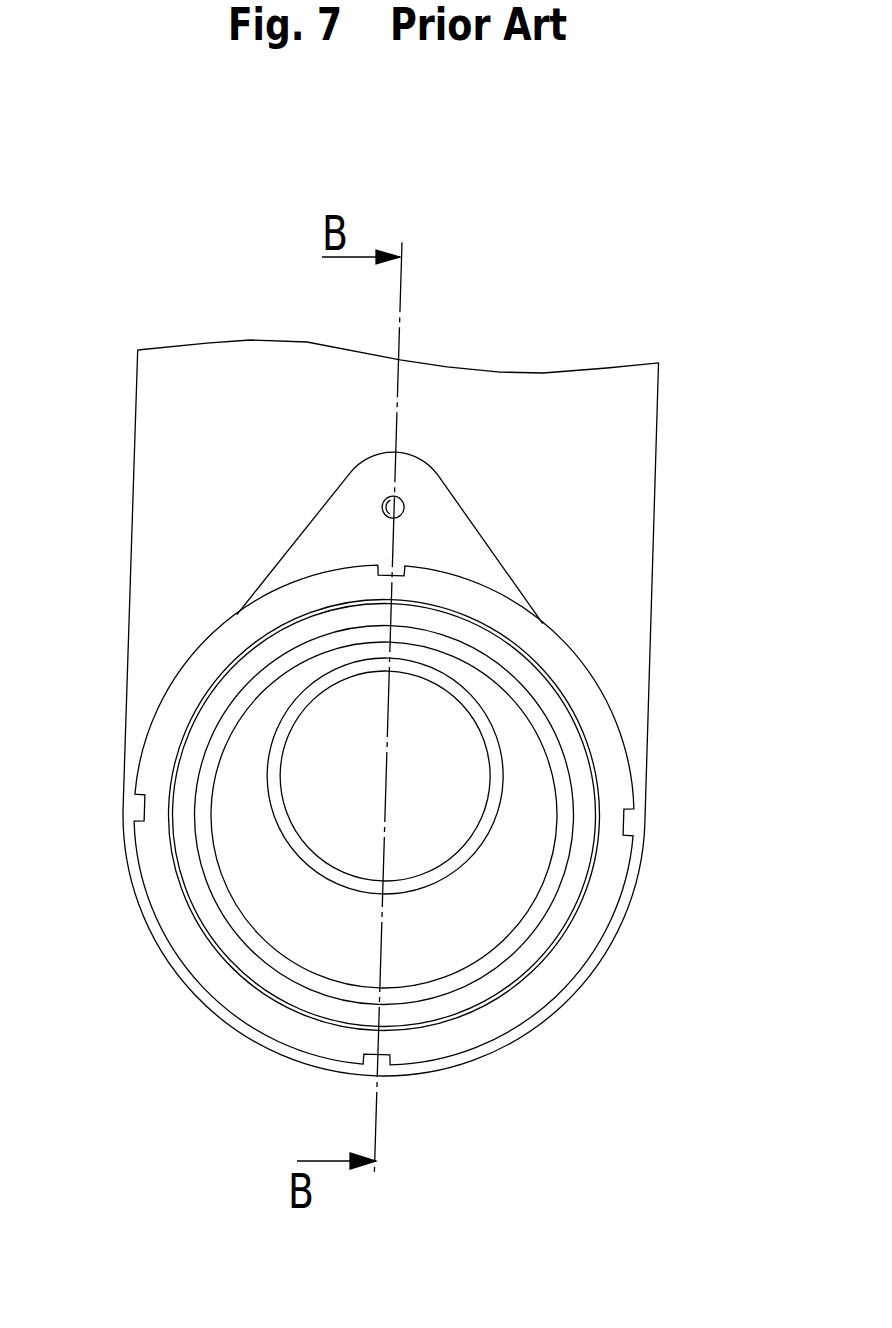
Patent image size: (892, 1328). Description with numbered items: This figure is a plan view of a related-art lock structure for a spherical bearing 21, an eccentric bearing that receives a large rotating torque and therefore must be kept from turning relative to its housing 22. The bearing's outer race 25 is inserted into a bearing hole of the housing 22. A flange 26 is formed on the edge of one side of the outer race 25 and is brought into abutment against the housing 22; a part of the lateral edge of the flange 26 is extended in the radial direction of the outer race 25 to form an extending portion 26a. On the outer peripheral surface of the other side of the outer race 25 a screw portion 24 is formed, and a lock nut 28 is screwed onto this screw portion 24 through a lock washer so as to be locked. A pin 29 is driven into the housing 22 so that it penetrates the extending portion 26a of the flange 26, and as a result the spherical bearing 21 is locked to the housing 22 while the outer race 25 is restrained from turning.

The spherical bearing 21 is at (215, 635).
The housing 22 is at (207, 343).
The screw portion 24 is at (587, 900).
The outer race 25 is at (583, 783).
The flange 26 is at (513, 553).
The extending portion 26a is at (450, 522).
The lock nut 28 is at (583, 690).
The pin 29 is at (400, 491).